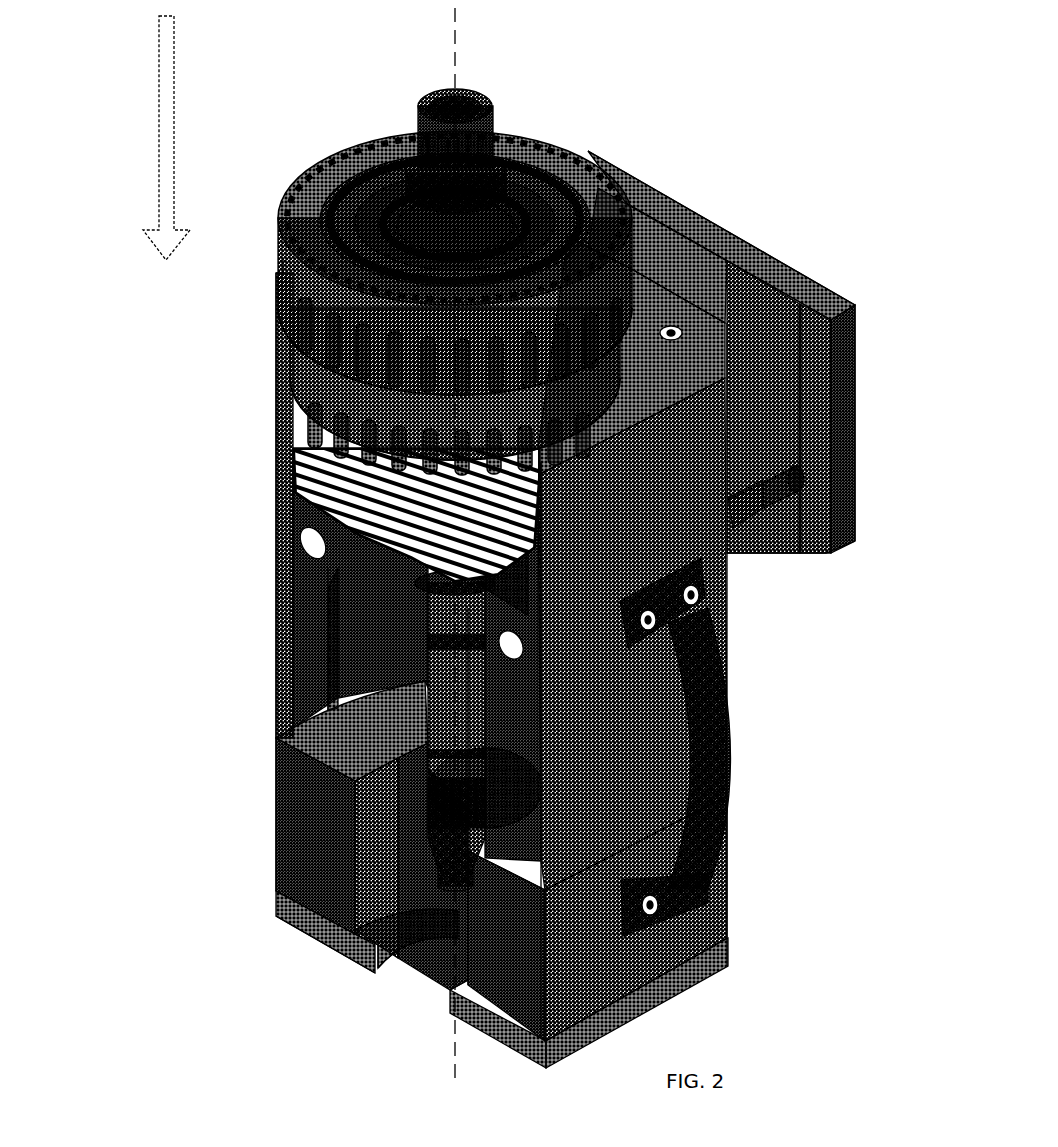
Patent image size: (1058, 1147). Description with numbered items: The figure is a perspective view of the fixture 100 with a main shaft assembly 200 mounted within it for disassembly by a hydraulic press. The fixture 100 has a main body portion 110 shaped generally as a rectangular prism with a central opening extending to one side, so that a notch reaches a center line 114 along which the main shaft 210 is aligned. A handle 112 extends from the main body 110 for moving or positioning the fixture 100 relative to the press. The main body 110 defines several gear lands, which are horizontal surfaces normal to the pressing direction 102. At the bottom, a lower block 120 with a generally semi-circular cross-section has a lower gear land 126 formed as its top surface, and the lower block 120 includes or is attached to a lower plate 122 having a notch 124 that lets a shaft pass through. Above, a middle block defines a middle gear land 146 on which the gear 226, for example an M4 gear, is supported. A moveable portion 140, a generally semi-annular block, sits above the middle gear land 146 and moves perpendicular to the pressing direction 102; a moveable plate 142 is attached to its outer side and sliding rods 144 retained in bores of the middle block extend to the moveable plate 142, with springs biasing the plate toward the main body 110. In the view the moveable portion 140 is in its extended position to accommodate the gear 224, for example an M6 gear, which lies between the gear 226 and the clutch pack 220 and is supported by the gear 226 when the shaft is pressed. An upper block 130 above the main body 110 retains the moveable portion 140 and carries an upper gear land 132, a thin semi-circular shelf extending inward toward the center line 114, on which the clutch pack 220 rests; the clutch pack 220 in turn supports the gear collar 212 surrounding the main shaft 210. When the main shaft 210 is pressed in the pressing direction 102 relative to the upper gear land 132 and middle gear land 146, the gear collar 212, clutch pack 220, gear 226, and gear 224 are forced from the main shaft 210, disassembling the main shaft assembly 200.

The fixture 100 is at (810, 122).
The pressing direction 102 is at (140, 78).
The main body portion 110 is at (705, 615).
The handle 112 is at (736, 748).
The center line 114 is at (440, 72).
The lower block 120 is at (705, 905).
The lower plate 122 is at (710, 957).
The notch 124 is at (393, 947).
The lower gear land 126 is at (300, 748).
The upper block 130 is at (690, 372).
The upper gear land 132 is at (528, 470).
The moveable portion 140 is at (658, 248).
The moveable plate 142 is at (762, 258).
The sliding rods 144 is at (745, 535).
The middle gear land 146 is at (296, 512).
The main shaft assembly 200 is at (394, 72).
The main shaft 210 is at (486, 82).
The gear collar 212 is at (505, 150).
The clutch pack 220 is at (300, 245).
The gear 224 is at (300, 428).
The gear 226 is at (310, 560).